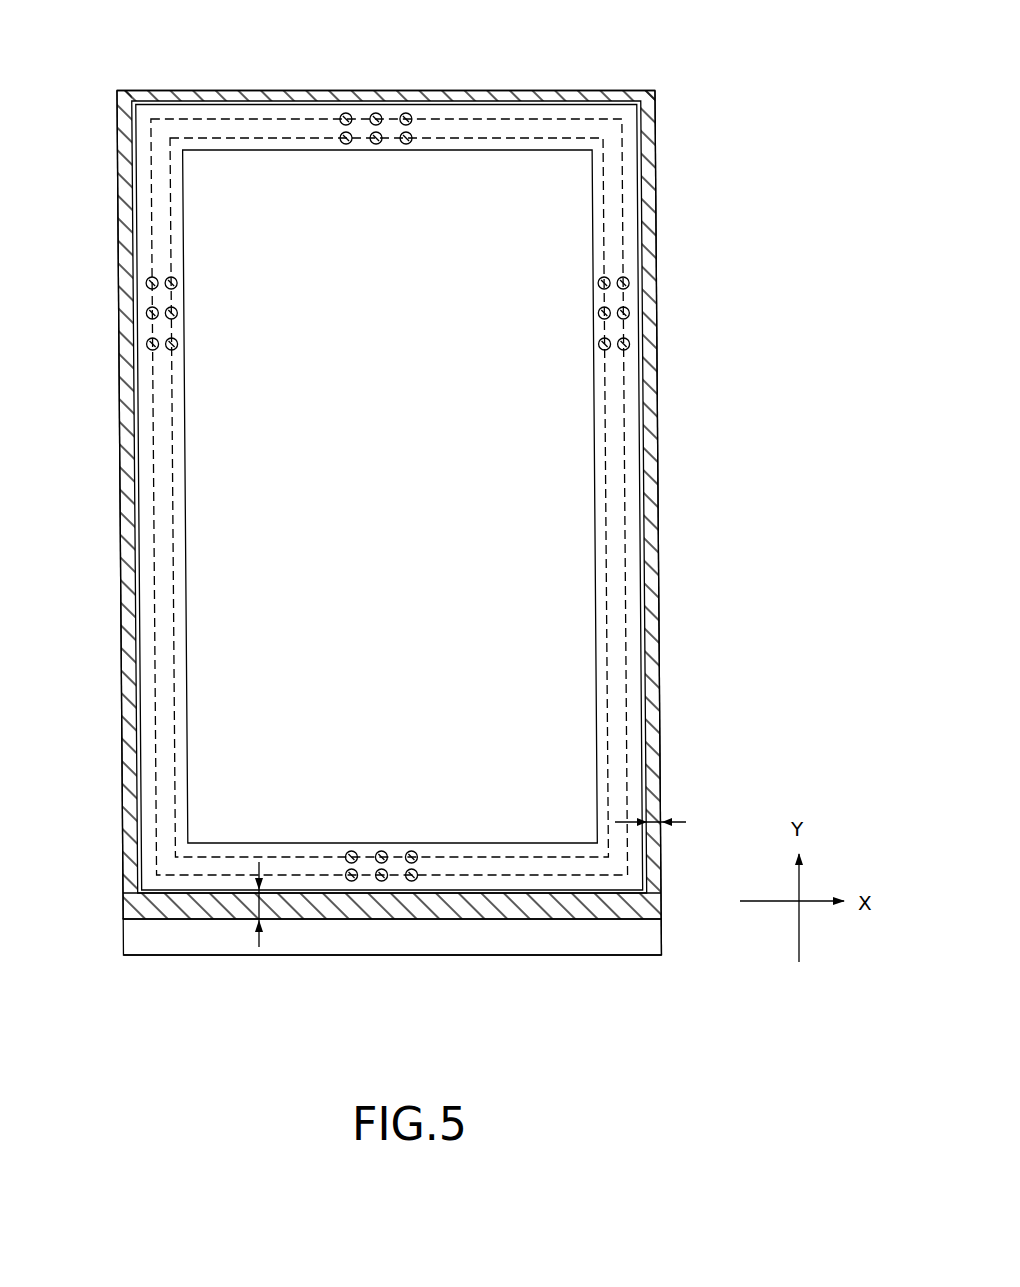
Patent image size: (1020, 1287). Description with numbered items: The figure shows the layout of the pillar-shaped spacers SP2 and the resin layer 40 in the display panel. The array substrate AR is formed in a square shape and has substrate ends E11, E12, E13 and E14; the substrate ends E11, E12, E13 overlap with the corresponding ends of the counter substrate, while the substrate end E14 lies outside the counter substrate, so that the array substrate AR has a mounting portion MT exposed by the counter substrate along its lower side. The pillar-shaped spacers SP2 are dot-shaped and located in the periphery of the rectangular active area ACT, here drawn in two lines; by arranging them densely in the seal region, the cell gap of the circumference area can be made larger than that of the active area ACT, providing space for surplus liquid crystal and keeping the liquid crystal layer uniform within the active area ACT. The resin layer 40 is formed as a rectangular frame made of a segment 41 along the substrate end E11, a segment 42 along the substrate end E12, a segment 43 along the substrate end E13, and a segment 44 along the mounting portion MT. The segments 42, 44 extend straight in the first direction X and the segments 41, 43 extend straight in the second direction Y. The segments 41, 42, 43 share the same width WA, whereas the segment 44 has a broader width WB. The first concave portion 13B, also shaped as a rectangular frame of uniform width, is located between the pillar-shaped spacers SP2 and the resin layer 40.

The resin layer 40 is at (652, 443).
The segment 41 is at (655, 513).
The segment 42 is at (433, 97).
The segment 43 is at (125, 418).
The segment 44 is at (331, 912).
The first concave portion 13B is at (645, 391).
The substrate end E11 is at (668, 764).
The substrate end E12 is at (546, 82).
The substrate end E13 is at (113, 546).
The substrate end E14 is at (423, 964).
The active area ACT is at (578, 618).
The pillar-shaped spacer SP2 is at (609, 278).
The array substrate AR is at (540, 945).
The mounting portion MT is at (638, 948).
The width WA is at (663, 816).
The width WB is at (245, 950).